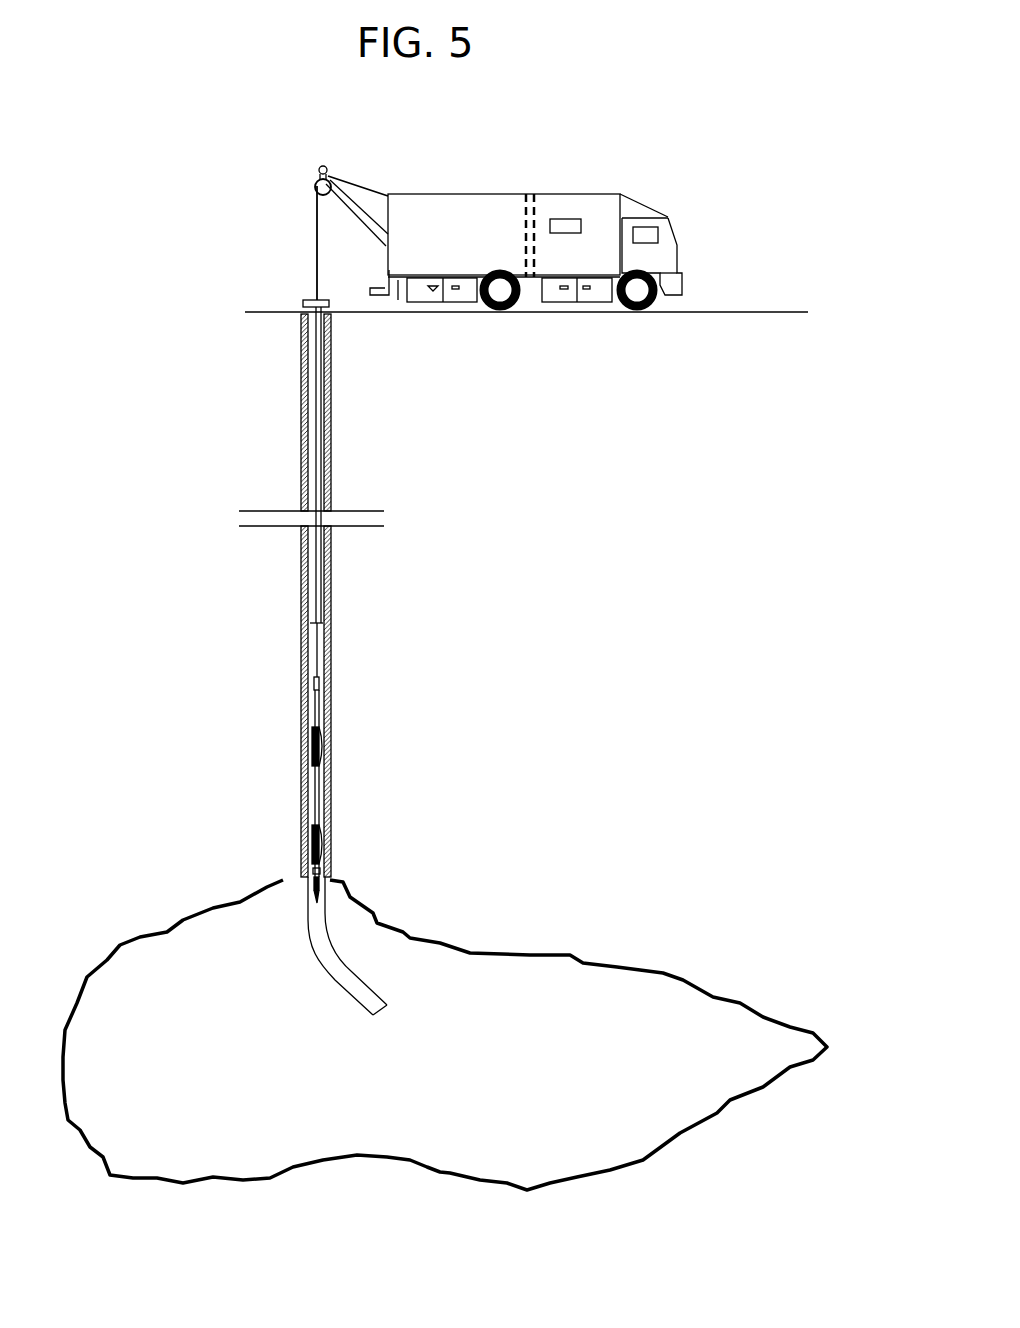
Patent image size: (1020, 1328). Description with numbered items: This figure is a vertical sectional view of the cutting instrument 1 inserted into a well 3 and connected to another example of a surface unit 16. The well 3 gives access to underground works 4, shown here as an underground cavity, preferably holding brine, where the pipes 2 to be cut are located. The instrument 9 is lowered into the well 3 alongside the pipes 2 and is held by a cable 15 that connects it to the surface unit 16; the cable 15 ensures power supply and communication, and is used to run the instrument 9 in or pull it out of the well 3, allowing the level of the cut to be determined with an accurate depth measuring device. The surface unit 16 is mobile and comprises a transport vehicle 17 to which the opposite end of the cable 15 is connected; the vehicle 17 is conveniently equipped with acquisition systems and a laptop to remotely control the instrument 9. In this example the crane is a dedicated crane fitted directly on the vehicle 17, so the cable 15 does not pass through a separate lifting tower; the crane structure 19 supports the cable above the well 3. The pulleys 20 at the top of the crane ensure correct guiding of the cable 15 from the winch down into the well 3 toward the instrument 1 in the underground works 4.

The instrument 1 is at (312, 893).
The pipes 2 is at (312, 584).
The well 3 is at (333, 677).
The underground works 4 is at (482, 987).
The instrument 9 is at (313, 795).
The cable 15 is at (315, 265).
The surface unit 16 is at (303, 160).
The transport vehicle 17 is at (560, 193).
The boom 19 is at (363, 210).
The pulleys 20 is at (315, 188).